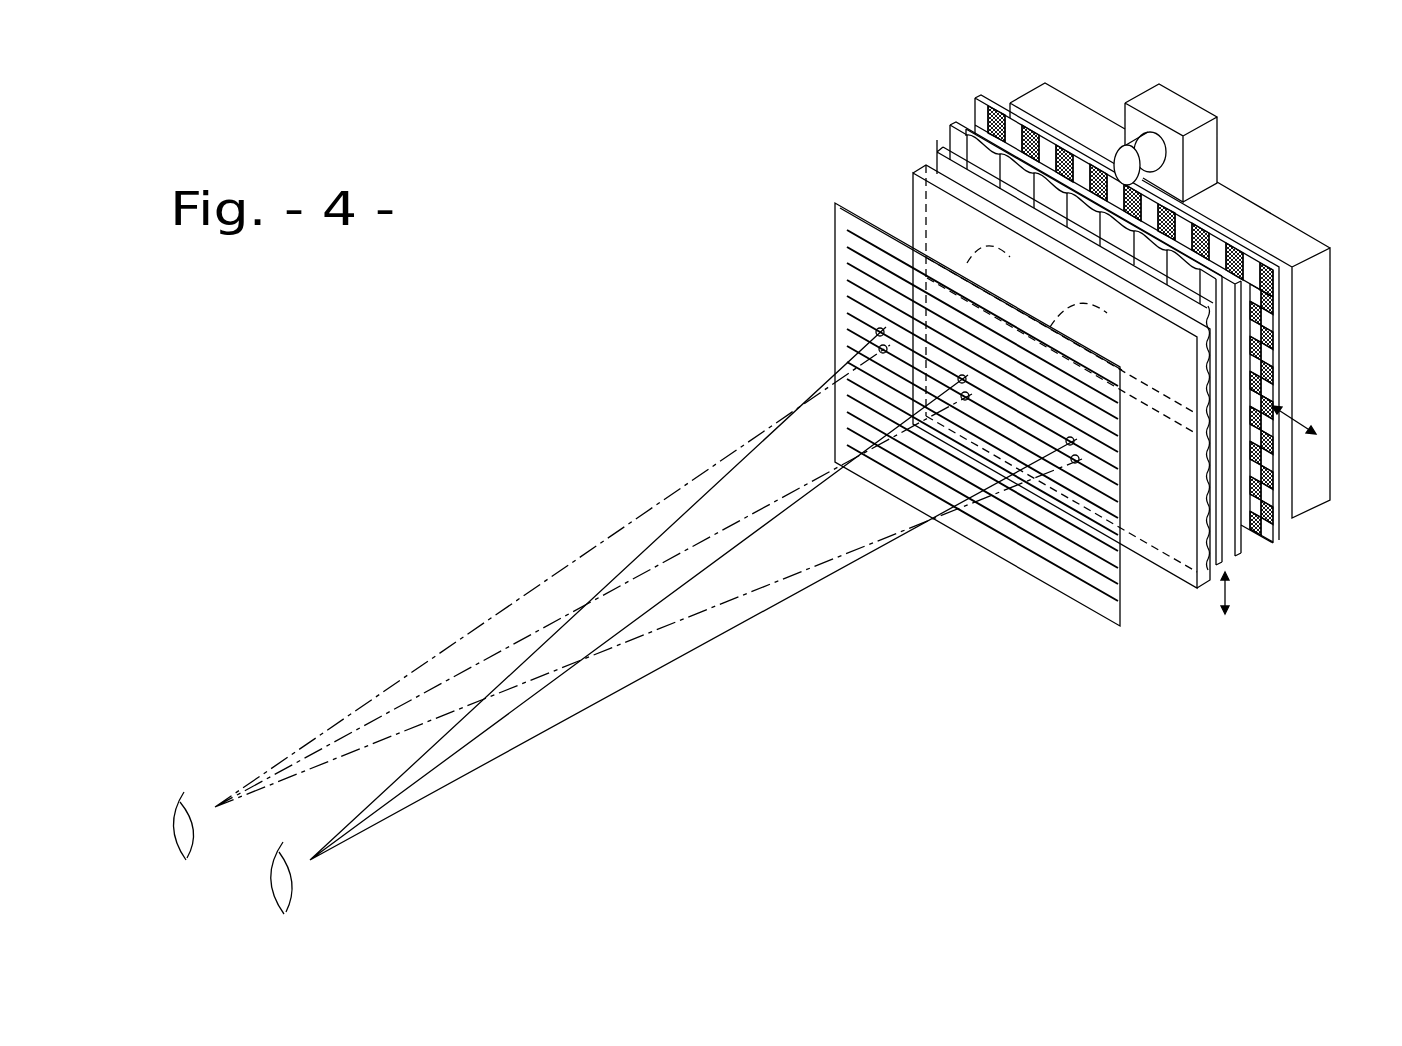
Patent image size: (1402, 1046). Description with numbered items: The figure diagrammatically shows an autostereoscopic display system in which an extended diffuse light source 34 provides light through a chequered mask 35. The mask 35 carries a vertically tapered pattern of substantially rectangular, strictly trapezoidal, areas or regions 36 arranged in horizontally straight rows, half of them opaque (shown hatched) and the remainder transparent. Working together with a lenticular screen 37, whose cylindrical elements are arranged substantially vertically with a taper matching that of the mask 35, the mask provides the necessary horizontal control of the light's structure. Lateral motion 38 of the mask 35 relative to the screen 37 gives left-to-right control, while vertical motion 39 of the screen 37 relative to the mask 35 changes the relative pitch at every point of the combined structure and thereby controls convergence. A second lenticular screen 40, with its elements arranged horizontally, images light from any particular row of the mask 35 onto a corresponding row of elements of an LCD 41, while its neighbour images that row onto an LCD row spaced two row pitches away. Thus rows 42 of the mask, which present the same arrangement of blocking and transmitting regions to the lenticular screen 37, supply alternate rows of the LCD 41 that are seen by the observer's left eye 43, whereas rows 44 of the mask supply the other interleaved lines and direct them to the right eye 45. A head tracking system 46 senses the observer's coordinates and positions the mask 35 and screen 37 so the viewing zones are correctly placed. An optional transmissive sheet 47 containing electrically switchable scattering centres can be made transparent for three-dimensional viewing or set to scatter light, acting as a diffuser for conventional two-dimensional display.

The extended diffuse light source 34 is at (1305, 497).
The chequered mask 35 is at (1272, 548).
The areas or regions 36 is at (1270, 307).
The lenticular screen 37 is at (1240, 568).
The lateral motion 38 is at (1277, 403).
The vertical motion 39 is at (1223, 613).
The lenticular screen 40 is at (912, 173).
The LCD 41 is at (1094, 603).
The rows of mask 42 is at (1278, 413).
The left eye 43 is at (177, 815).
The rows of the mask 44 is at (1263, 380).
The right eye 45 is at (265, 888).
The head tracking system 46 is at (1176, 116).
The transmissive sheet 47 is at (937, 148).